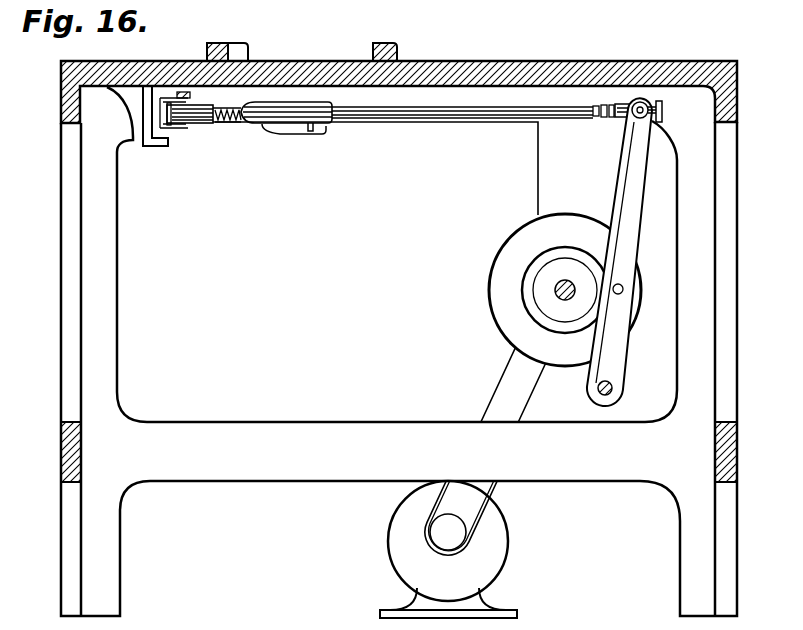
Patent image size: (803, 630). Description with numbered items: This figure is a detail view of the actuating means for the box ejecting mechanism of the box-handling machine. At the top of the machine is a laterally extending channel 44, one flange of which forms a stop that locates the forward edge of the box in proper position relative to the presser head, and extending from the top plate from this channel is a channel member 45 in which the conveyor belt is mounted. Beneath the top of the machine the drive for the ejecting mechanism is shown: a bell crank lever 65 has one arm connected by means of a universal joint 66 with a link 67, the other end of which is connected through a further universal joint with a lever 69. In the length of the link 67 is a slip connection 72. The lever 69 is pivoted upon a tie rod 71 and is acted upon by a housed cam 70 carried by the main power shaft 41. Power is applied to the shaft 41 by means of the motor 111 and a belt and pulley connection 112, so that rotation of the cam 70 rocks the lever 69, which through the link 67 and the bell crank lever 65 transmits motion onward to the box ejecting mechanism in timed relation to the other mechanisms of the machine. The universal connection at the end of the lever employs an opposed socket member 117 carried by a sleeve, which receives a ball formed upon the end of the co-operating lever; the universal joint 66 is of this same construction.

The channel 44 is at (372, 46).
The channel member 45 is at (228, 44).
The bell crank lever 65 is at (179, 92).
The universal joint 66 is at (209, 124).
The link 67 is at (377, 112).
The lever 69 is at (622, 182).
The housed cam 70 is at (490, 272).
The main power shaft 41 is at (556, 291).
The tie rod 71 is at (612, 387).
The slip connection 72 is at (296, 116).
The belt and pulley connection 112 is at (490, 498).
The motor 111 is at (495, 523).
The socket member 117 is at (651, 100).